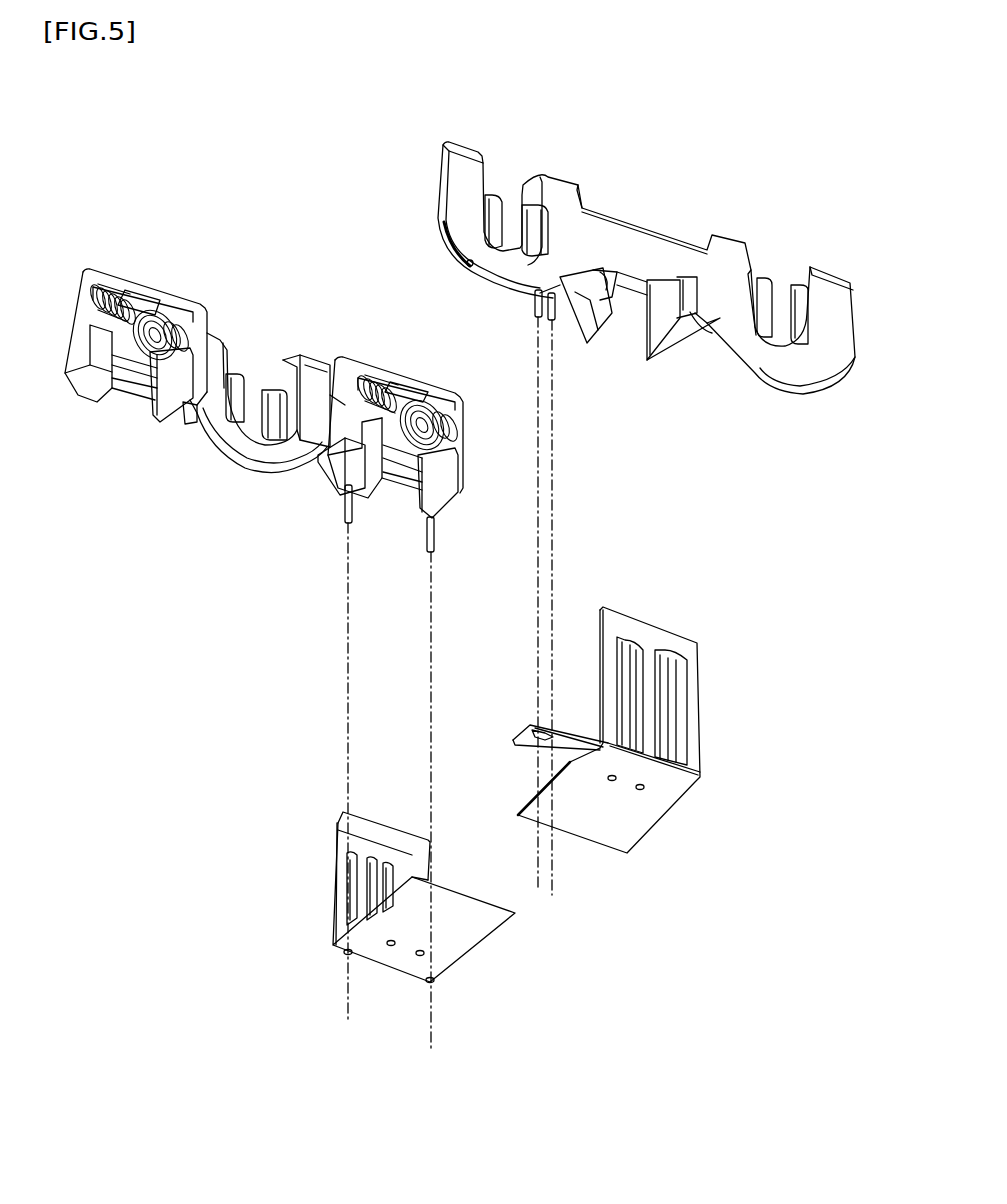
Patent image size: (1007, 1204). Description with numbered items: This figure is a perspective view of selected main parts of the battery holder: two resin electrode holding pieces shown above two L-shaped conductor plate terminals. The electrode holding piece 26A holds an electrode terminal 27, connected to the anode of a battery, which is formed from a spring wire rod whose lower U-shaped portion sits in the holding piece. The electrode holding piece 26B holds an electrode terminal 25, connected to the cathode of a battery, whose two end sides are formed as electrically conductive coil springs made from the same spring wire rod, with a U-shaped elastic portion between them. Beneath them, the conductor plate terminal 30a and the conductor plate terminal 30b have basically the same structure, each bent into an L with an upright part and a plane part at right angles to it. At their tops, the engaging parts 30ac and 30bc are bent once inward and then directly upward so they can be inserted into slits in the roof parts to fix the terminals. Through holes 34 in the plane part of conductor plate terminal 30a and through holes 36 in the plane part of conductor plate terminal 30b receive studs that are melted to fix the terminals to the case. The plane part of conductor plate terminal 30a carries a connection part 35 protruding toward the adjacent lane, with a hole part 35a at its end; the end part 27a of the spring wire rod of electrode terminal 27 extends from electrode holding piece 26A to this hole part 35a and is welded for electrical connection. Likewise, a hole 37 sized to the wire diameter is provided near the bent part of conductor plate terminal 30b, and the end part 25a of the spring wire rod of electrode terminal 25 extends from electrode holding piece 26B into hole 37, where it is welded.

The electrode terminal 25 is at (147, 327).
The end part of the spring wire rod of the electrode terminal 25a is at (345, 510).
The electrode holding piece 26A is at (635, 247).
The electrode holding piece 26B is at (307, 387).
The electrode terminal 27 is at (495, 192).
The end part of the spring wire rod of the electrode terminal 27a is at (537, 303).
The conductor plate terminal 30a is at (690, 753).
The engaging part 30ac is at (643, 622).
The conductor plate terminal 30b is at (337, 835).
The engaging part 30bc is at (343, 812).
The through holes 34 is at (640, 790).
The connection part 35 is at (578, 730).
The hole part 35a is at (533, 757).
The through holes 36 is at (390, 948).
The hole 37 is at (348, 955).